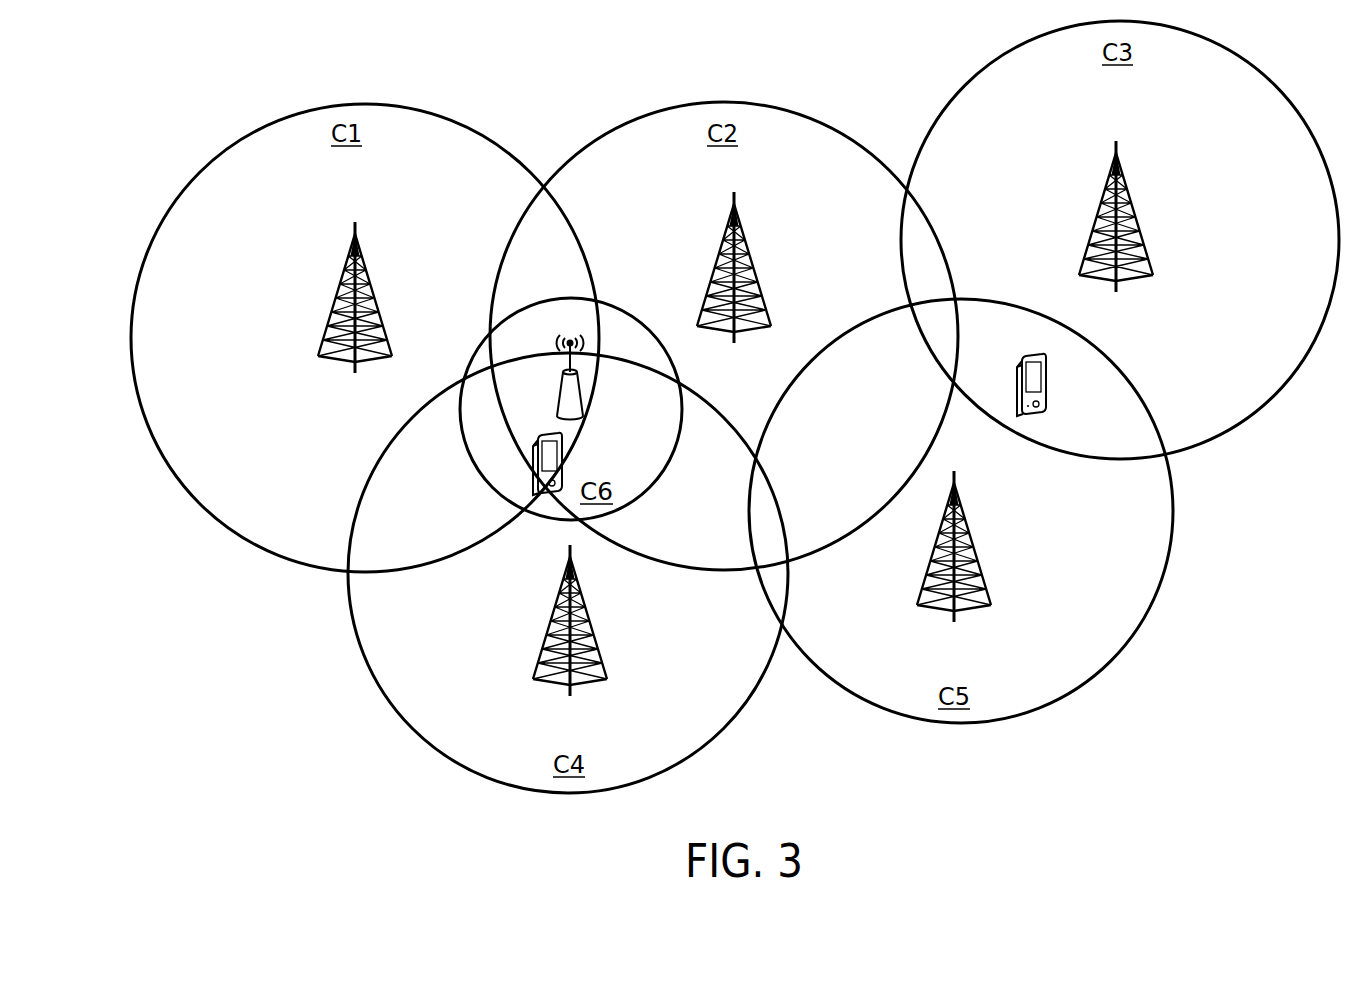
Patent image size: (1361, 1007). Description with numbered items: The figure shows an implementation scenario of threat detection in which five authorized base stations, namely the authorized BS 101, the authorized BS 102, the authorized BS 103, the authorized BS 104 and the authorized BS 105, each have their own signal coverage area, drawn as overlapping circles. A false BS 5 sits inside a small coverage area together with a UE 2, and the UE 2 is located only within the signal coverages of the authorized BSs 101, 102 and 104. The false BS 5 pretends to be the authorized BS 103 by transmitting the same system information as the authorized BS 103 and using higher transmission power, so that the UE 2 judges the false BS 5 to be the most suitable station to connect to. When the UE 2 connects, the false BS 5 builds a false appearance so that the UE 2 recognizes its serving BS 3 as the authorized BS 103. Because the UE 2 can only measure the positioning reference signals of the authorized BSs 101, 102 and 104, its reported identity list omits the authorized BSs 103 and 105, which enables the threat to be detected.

The authorized BS 101 is at (383, 313).
The authorized BS 102 is at (760, 285).
The authorized BS 103 is at (1141, 234).
The authorized BS 104 is at (595, 637).
The authorized BS 105 is at (980, 562).
The false BS 5 is at (582, 400).
The UE 2 is at (532, 463).
The serving BS 3 is at (1047, 386).